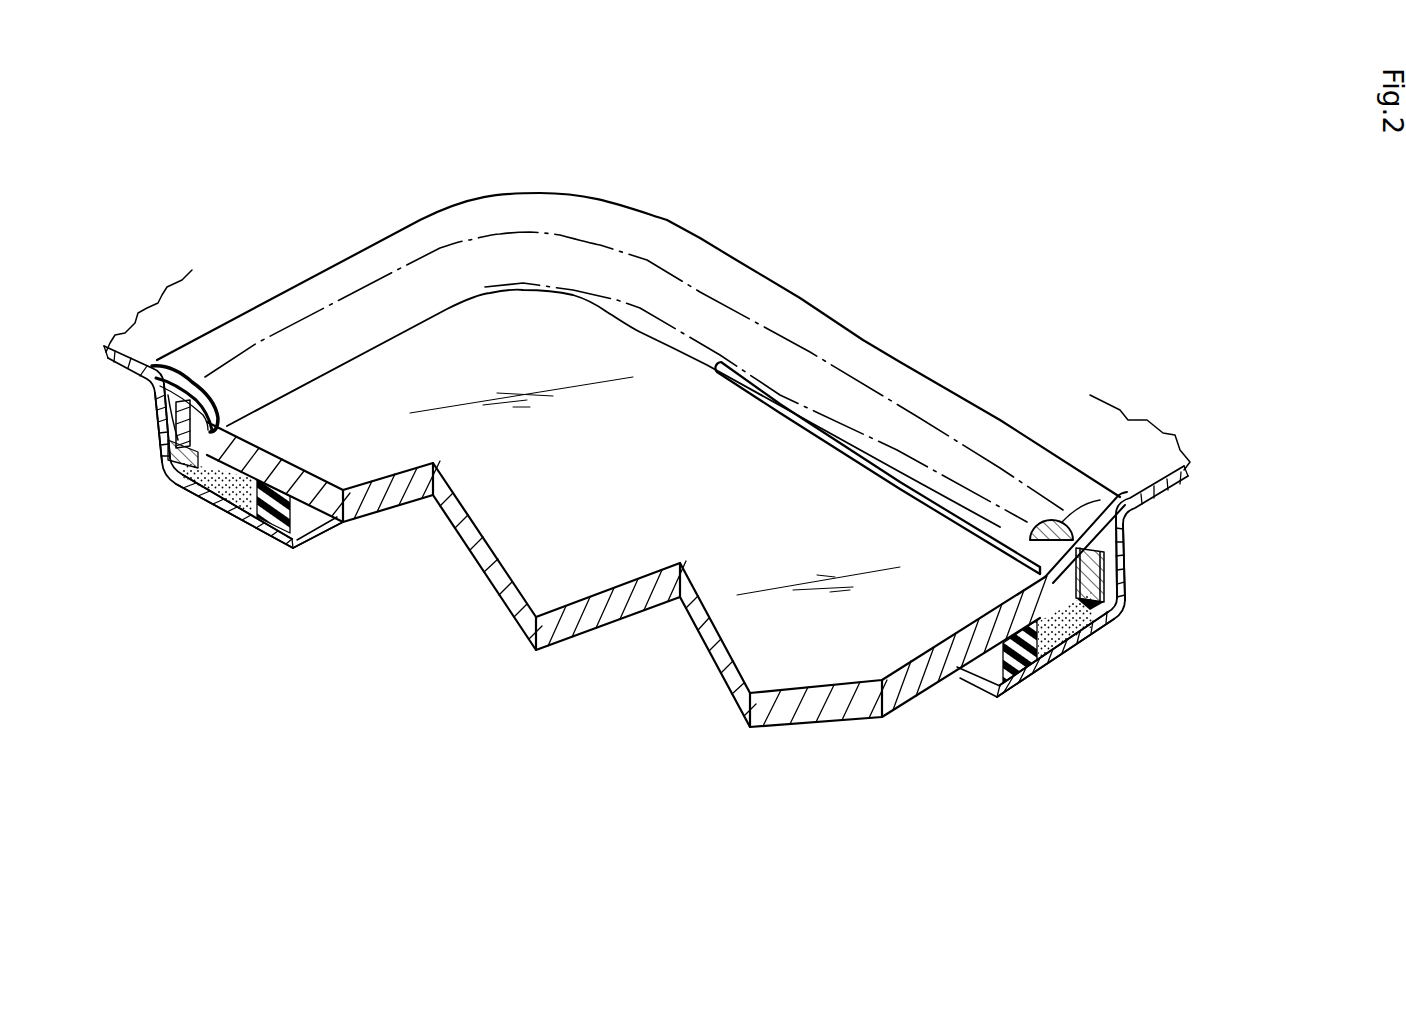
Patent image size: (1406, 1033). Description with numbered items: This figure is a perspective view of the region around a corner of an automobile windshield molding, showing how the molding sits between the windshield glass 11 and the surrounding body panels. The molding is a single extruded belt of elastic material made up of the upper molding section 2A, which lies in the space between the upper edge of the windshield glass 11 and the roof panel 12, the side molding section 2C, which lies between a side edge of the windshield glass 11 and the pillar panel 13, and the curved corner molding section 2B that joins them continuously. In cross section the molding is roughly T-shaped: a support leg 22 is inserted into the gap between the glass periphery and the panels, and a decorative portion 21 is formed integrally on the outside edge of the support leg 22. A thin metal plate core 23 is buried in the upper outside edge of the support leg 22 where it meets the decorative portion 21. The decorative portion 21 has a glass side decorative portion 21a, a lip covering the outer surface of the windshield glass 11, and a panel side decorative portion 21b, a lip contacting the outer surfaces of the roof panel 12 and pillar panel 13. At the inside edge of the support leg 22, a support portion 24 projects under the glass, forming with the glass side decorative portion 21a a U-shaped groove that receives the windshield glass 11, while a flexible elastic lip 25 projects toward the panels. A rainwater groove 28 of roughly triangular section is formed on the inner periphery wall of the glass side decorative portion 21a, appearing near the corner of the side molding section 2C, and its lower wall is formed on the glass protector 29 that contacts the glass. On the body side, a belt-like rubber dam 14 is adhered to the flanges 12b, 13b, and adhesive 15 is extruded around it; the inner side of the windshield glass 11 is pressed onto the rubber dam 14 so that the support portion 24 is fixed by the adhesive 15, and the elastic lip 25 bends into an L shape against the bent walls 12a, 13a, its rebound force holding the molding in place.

The upper molding section 2A is at (247, 280).
The corner molding section 2B is at (657, 212).
The side molding section 2C is at (1038, 438).
The windshield glass 11 is at (623, 557).
The roof panel 12 is at (157, 321).
The bent wall 12a is at (152, 418).
The flange 12b is at (222, 513).
The pillar panel 13 is at (1120, 440).
The bent wall 13a is at (1126, 547).
The flange 13b is at (1068, 655).
The rubber dam 14 is at (312, 528).
The adhesive 15 is at (250, 508).
The decorative portion 21 is at (190, 363).
The glass side decorative portion 21a is at (305, 370).
The panel side decorative portion 21b is at (215, 347).
The support leg 22 is at (172, 470).
The metal plate core 23 is at (153, 390).
The support portion 24 is at (203, 470).
The elastic lip 25 is at (169, 430).
The rainwater groove 28 is at (863, 443).
The glass protector 29 is at (1032, 572).